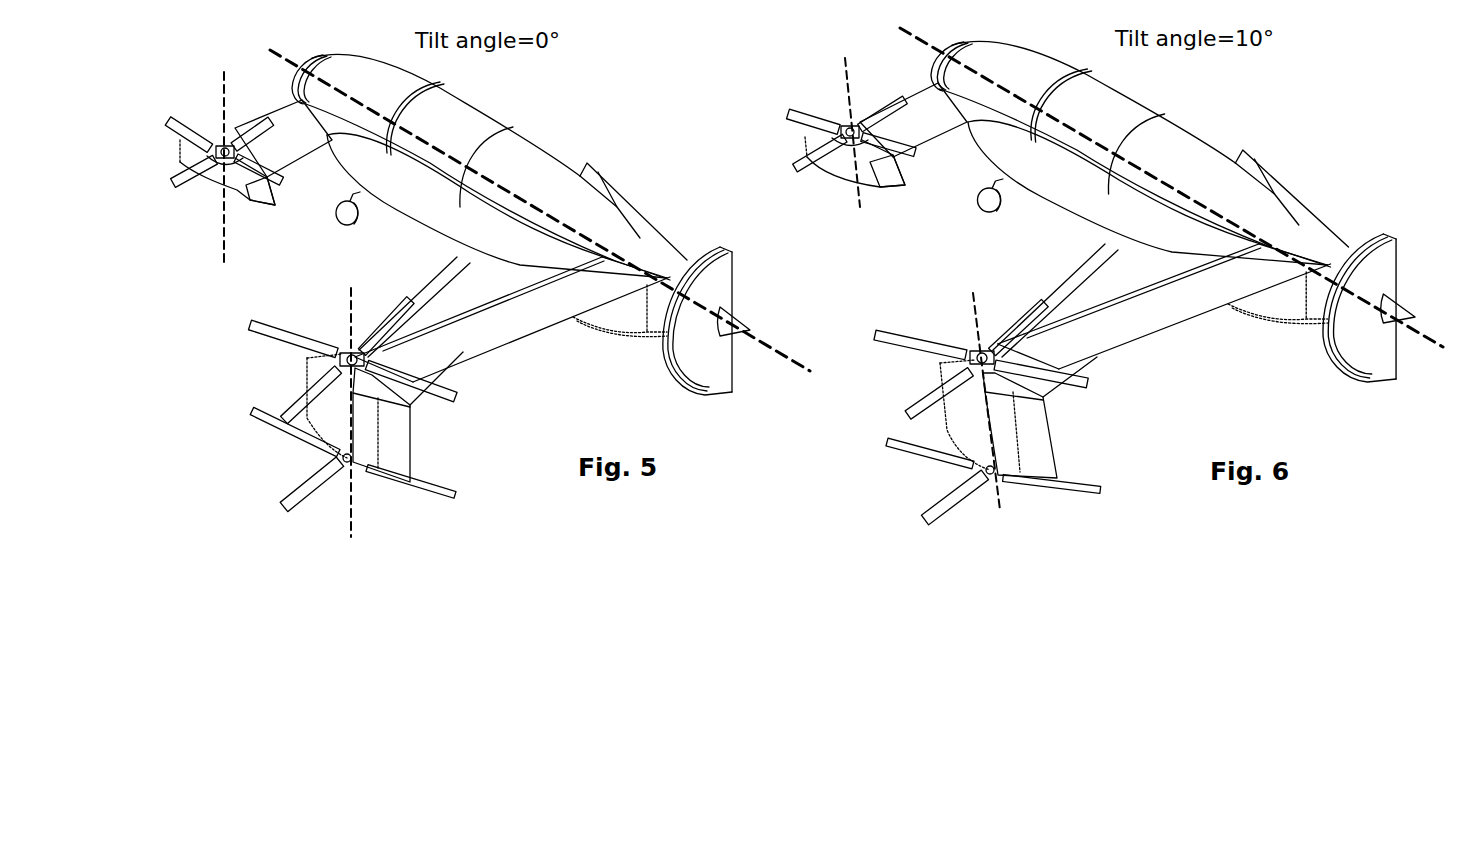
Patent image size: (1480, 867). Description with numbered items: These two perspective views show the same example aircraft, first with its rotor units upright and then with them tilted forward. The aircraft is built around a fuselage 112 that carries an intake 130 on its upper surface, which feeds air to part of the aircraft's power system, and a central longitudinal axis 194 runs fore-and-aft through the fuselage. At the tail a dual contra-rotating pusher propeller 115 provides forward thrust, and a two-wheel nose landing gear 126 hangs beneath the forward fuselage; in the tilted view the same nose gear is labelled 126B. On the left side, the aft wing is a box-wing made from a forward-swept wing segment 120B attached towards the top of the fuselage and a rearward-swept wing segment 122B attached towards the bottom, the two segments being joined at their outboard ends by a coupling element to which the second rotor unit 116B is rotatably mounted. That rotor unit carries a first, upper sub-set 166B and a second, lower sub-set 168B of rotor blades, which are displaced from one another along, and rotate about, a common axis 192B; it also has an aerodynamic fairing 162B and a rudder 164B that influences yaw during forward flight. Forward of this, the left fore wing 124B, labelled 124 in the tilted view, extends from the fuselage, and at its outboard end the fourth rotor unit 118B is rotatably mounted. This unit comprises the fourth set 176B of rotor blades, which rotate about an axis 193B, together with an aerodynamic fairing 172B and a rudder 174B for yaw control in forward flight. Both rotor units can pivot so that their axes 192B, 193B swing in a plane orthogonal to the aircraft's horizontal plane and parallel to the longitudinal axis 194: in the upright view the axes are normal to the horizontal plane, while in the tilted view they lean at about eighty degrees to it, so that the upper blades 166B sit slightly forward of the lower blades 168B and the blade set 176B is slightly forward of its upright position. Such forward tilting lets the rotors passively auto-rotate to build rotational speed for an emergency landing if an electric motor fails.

In FIG. 5, the fuselage 112 is at (535, 135).
In FIG. 6, the fuselage 112 is at (1180, 125).
In FIG. 5, the intake 130 is at (585, 173).
In FIG. 6, the intake 130 is at (1240, 160).
In FIG. 5, the central longitudinal axis 194 is at (573, 227).
In FIG. 6, the central longitudinal axis 194 is at (1238, 227).
In FIG. 5, the nose landing gear 126 is at (340, 220).
In FIG. 6, the sensor pod 126B is at (975, 207).
In FIG. 5, the forward-swept wing segment 120B is at (495, 318).
In FIG. 6, the forward-swept wing segment 120B is at (1190, 308).
In FIG. 5, the rearward-swept wing segment 122B is at (460, 287).
In FIG. 6, the rearward-swept wing segment 122B is at (1105, 278).
In FIG. 5, the dual contra-rotating pusher propeller 115 is at (690, 365).
In FIG. 6, the dual contra-rotating pusher propeller 115 is at (1350, 365).
In FIG. 5, the fourth rotor unit 118B is at (210, 156).
In FIG. 6, the fourth rotor unit 118B is at (838, 145).
In FIG. 5, the axis 193B is at (223, 120).
In FIG. 6, the axis 193B is at (847, 102).
In FIG. 5, the fourth set of rotor blades 176B is at (170, 127).
In FIG. 6, the fourth set of rotor blades 176B is at (800, 122).
In FIG. 5, the aerodynamic fairing 172B is at (217, 180).
In FIG. 6, the aerodynamic fairing 172B is at (857, 165).
In FIG. 5, the rudder 174B is at (255, 198).
In FIG. 6, the rudder 174B is at (890, 173).
In FIG. 5, the left fore wing 124B is at (293, 118).
In FIG. 6, the front pylon 124 is at (927, 103).
In FIG. 5, the second rotor unit 116B is at (371, 446).
In FIG. 6, the second rotor unit 116B is at (1026, 449).
In FIG. 5, the common axis 192B is at (350, 518).
In FIG. 6, the common axis 192B is at (1000, 520).
In FIG. 5, the first sub-set of rotor blades 166B is at (283, 340).
In FIG. 6, the first sub-set of rotor blades 166B is at (913, 347).
In FIG. 5, the second sub-set of rotor blades 168B is at (288, 510).
In FIG. 6, the second sub-set of rotor blades 168B is at (930, 517).
In FIG. 5, the aerodynamic fairing 162B is at (340, 423).
In FIG. 6, the aerodynamic fairing 162B is at (973, 432).
In FIG. 5, the rudder 164B is at (403, 438).
In FIG. 6, the rudder 164B is at (1037, 437).